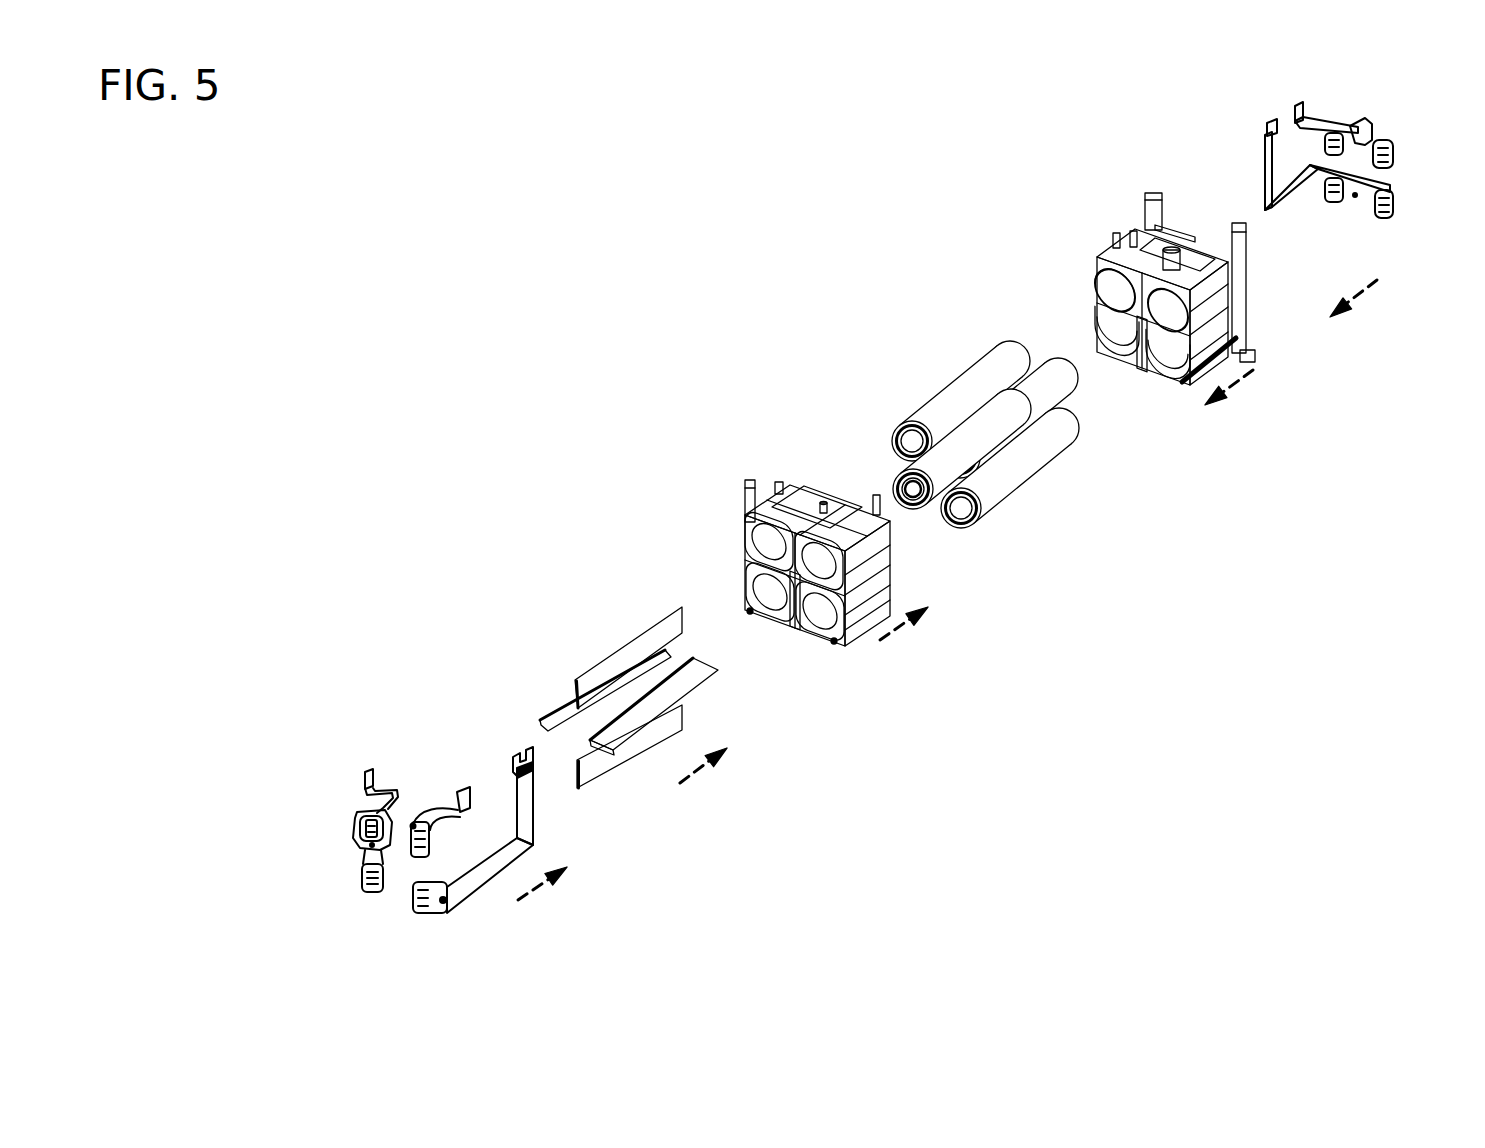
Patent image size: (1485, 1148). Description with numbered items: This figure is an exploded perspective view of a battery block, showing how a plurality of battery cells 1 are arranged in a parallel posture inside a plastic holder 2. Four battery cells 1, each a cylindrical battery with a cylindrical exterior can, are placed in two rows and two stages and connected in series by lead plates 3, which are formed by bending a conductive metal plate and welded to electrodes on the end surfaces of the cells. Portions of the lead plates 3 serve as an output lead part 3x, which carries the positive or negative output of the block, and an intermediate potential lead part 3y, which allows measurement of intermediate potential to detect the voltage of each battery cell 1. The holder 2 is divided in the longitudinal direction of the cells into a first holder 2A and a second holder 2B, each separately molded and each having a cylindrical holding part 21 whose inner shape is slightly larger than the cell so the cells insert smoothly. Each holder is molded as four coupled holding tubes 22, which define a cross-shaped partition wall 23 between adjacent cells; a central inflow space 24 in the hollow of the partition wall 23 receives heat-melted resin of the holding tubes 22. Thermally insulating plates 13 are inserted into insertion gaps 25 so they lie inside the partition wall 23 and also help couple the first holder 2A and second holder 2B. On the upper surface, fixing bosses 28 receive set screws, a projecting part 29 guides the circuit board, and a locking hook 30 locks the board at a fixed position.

The battery cell 1 is at (957, 392).
The holder 2 is at (1220, 545).
The first holder 2A is at (866, 656).
The second holder 2B is at (1187, 406).
The lead plate 3 is at (360, 856).
The output lead part 3x is at (460, 800).
The intermediate potential lead part 3y is at (365, 782).
The thermally insulating plate 13 is at (627, 657).
The holding part 21 is at (1098, 300).
The holding tube 22 is at (1108, 285).
The partition wall 23 is at (1215, 300).
The inflow space 24 is at (778, 590).
The insertion gap 25 is at (748, 598).
The fixing boss 28 is at (812, 505).
The projecting part 29 is at (1150, 212).
The locking hook 30 is at (778, 482).